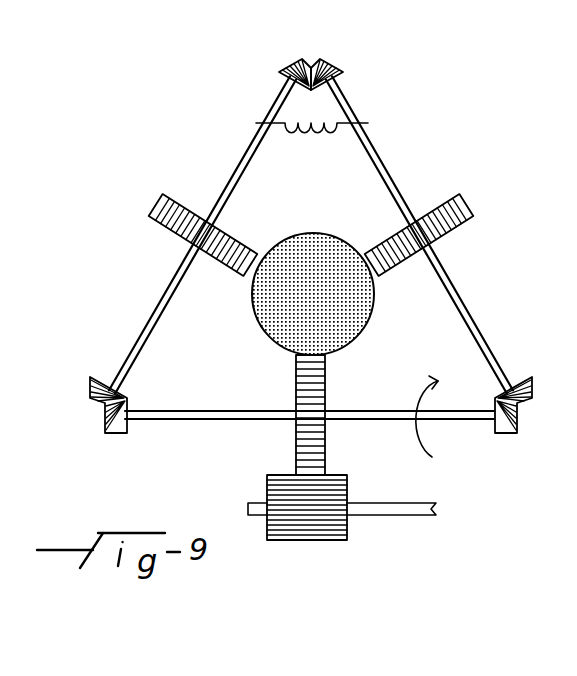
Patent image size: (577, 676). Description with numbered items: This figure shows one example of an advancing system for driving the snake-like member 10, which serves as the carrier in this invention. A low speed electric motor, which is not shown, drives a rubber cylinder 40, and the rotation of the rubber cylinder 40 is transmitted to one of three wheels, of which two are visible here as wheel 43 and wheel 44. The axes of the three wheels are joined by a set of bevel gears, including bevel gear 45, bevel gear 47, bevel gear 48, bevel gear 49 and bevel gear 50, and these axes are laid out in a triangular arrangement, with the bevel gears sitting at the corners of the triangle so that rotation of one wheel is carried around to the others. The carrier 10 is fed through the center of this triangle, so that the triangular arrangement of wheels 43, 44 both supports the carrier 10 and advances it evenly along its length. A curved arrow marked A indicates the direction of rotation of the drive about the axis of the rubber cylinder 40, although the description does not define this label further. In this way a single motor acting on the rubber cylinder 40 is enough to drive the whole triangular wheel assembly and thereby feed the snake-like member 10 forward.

The snake-like member 10 is at (380, 322).
The rubber cylinder 40 is at (312, 525).
The wheel 43 is at (450, 239).
The wheel 44 is at (192, 214).
The bevel gear 45 is at (507, 436).
The bevel gear 47 is at (343, 70).
The bevel gear 48 is at (278, 64).
The bevel gear 49 is at (99, 377).
The bevel gear 50 is at (112, 436).
The axis of rotation A is at (530, 378).